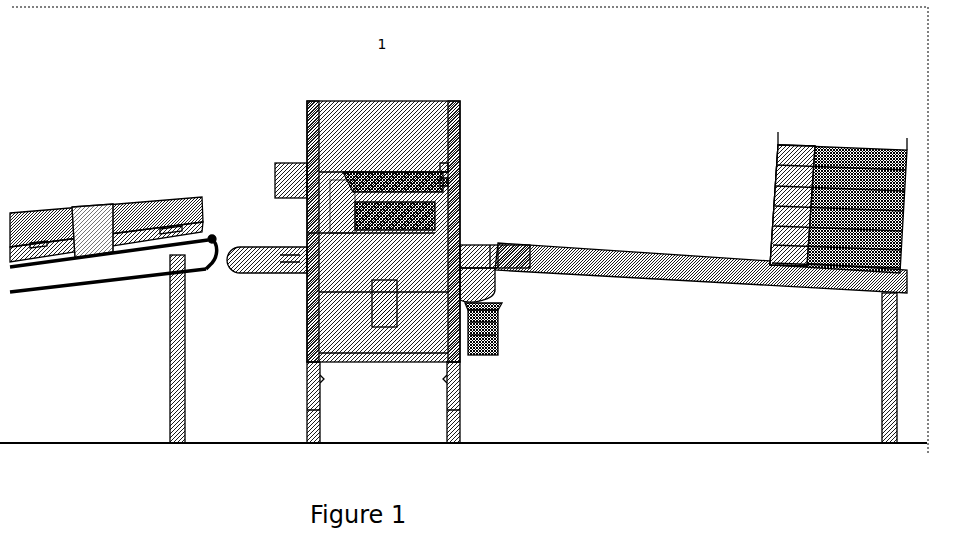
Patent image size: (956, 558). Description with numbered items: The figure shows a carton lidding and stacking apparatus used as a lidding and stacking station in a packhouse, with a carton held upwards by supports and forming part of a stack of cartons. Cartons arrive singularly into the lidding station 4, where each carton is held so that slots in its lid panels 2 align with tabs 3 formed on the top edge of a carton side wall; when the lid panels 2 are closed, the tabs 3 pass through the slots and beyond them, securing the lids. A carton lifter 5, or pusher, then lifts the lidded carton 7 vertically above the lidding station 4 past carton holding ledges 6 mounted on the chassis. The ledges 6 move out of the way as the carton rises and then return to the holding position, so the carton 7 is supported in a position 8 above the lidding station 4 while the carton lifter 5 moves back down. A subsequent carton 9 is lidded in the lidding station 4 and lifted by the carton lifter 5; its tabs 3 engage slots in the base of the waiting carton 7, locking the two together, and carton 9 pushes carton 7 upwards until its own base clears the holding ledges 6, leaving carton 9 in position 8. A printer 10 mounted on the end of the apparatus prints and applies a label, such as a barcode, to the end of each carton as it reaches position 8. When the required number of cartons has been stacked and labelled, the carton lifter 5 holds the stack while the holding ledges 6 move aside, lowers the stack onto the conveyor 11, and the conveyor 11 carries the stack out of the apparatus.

The lid panels 2 is at (75, 235).
The tabs 3 is at (778, 135).
The lidding station 4 is at (338, 255).
The carton lifter 5 is at (378, 258).
The carton holding ledges 6 is at (382, 197).
The lidded carton 7 is at (435, 180).
The position 8 is at (452, 182).
The subsequent carton 9 is at (368, 243).
The printer 10 is at (273, 178).
The conveyor 11 is at (639, 244).